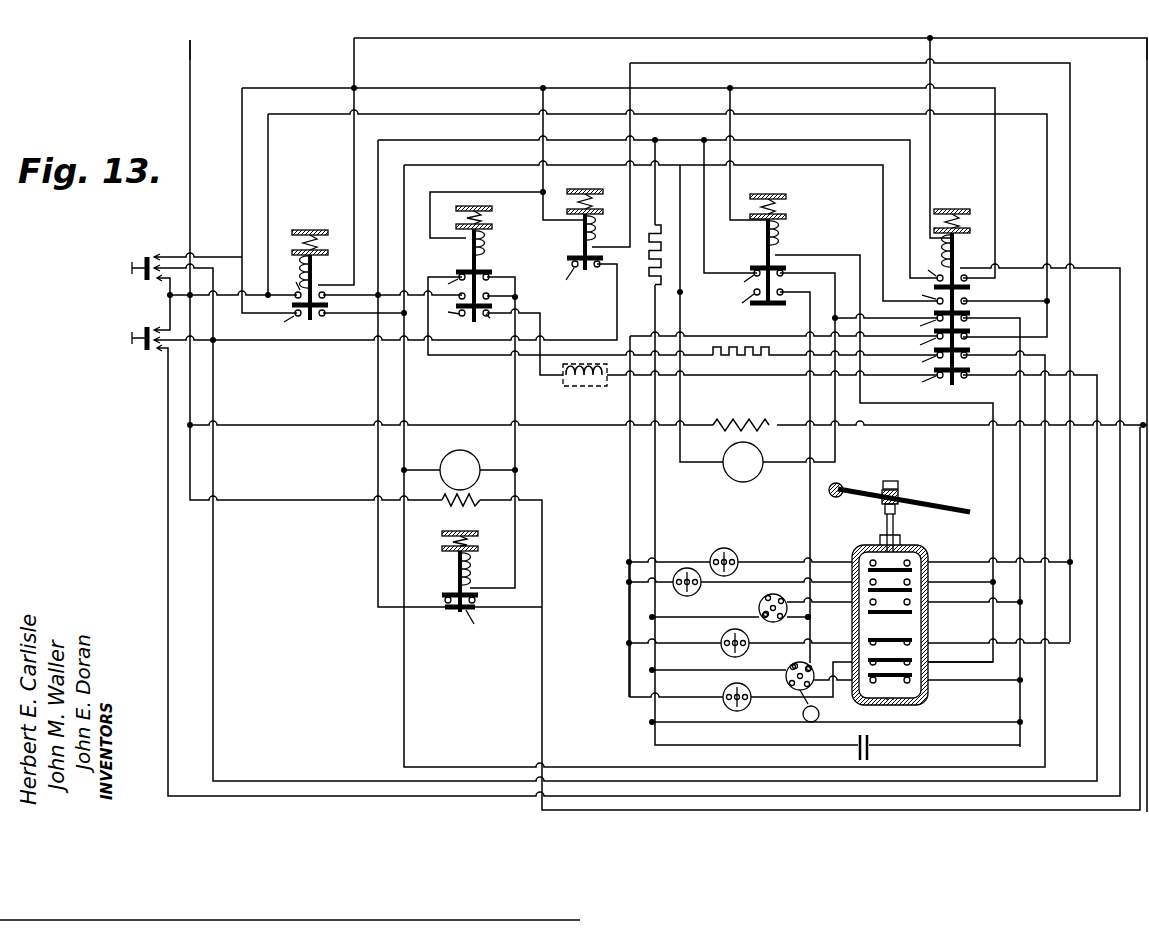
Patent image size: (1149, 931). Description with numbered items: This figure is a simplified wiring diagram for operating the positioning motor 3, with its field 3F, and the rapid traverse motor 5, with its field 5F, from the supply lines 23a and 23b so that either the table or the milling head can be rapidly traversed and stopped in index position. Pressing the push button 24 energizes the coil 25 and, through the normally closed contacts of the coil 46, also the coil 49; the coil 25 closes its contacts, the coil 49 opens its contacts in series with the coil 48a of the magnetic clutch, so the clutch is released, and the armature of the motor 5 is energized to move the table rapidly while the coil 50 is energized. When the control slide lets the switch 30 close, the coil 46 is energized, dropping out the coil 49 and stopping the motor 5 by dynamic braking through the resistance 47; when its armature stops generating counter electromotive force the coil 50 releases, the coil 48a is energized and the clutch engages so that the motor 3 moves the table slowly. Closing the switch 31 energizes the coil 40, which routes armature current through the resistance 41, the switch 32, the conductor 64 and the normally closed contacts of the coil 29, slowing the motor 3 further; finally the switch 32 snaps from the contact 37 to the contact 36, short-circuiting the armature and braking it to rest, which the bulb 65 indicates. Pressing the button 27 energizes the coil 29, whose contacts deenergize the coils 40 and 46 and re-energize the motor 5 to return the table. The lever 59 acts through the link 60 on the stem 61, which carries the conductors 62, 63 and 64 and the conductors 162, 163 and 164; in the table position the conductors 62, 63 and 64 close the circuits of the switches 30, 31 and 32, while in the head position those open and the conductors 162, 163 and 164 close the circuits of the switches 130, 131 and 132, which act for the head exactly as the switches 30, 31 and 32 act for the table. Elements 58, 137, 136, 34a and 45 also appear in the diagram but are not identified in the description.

The supply line 23a is at (188, 78).
The supply line 23b is at (1144, 74).
The push button 24 is at (146, 255).
The button 27 is at (141, 329).
The coil 25 is at (310, 282).
The coil 49 is at (477, 271).
The coil 46 is at (589, 241).
The resistance 41 is at (648, 245).
The coil 40 is at (769, 255).
The coil 29 is at (947, 303).
The coil of magnetic clutch 48a is at (585, 386).
The resistance 47 is at (736, 360).
The field of positioning motor 3F is at (768, 410).
The positioning motor 3 is at (743, 462).
The rapid traverse motor 5 is at (460, 470).
The field of rapid traverse motor 5F is at (460, 505).
The coil 50 is at (472, 586).
The handle knob 58 is at (840, 484).
The lever 59 is at (936, 504).
The link 60 is at (898, 506).
The stem 61 is at (884, 519).
The conductor 62 is at (910, 642).
The conductor 162 is at (910, 563).
The conductor 163 is at (910, 582).
The conductor 164 is at (910, 602).
The conductor 63 is at (910, 662).
The conductor 64 is at (910, 682).
The switch 130 is at (734, 550).
The switch 131 is at (680, 596).
The switch 30 is at (723, 636).
The switch 31 is at (724, 702).
The switch 132 is at (762, 601).
The contact 137 is at (764, 618).
The contact 136 is at (818, 616).
The switch 32 is at (788, 682).
The contact 37 is at (790, 666).
The contact 36 is at (820, 662).
The contact 34a is at (796, 700).
The bulb 65 is at (818, 714).
The condenser 45 is at (857, 743).